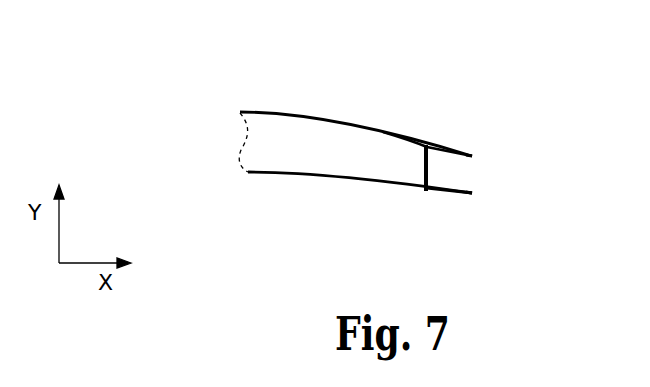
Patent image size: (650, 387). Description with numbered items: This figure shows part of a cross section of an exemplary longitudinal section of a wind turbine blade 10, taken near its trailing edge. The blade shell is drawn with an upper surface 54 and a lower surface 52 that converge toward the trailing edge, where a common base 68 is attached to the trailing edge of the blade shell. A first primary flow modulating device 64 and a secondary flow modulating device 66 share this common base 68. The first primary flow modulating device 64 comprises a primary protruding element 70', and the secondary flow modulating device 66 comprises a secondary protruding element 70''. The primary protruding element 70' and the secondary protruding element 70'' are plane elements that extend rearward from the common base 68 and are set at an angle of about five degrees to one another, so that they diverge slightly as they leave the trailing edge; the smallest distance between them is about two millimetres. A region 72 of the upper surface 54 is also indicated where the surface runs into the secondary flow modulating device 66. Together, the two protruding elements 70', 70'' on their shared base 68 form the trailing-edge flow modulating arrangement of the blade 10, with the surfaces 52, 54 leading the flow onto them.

The airfoil / blade 10 is at (205, 107).
The pressure side surface 52 is at (293, 173).
The suction side surface 54 is at (298, 112).
The first primary flow modulating device 64 is at (448, 194).
The secondary flow modulating device 66 is at (450, 150).
The common base 68 is at (428, 172).
The primary protruding element 70' is at (518, 227).
The secondary protruding element 70'' is at (521, 125).
The suction side transition region 72 is at (383, 132).